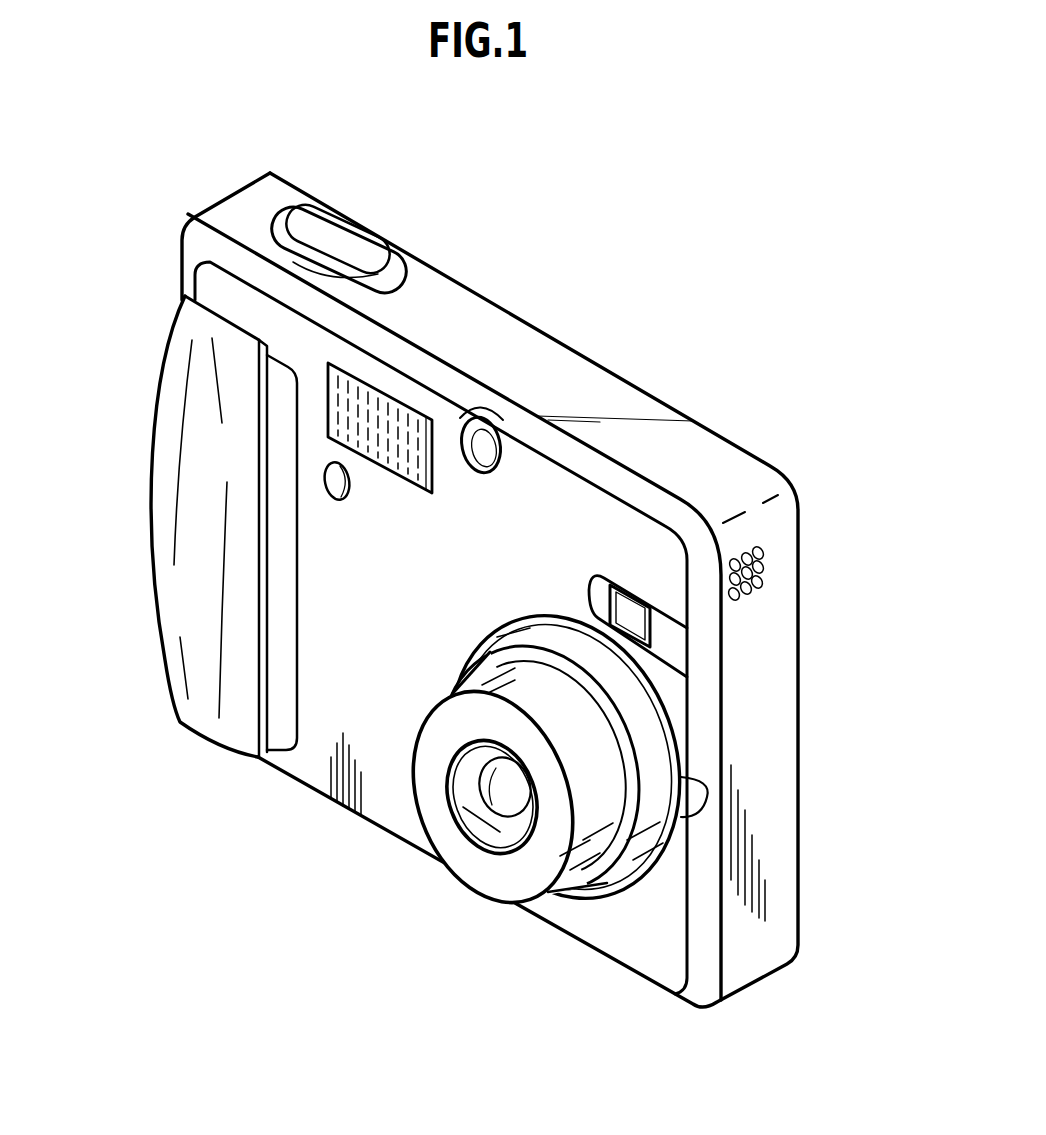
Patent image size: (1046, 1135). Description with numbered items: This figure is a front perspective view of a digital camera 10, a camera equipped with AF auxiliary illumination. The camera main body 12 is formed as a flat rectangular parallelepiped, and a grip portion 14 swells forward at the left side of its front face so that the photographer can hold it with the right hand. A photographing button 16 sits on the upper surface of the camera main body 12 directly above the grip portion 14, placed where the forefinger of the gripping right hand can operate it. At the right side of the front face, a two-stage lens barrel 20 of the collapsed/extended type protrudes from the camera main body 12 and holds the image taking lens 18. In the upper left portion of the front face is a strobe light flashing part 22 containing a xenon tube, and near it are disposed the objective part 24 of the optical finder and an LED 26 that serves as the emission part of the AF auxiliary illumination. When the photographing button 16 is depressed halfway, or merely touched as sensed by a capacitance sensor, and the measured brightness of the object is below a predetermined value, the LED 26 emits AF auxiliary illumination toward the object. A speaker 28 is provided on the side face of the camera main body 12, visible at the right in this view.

The digital camera 10 is at (589, 306).
The camera main body 12 is at (502, 383).
The grip portion 14 is at (162, 460).
The photographing button 16 is at (343, 232).
The image taking lens 18 is at (503, 800).
The lens barrel 20 is at (647, 840).
The strobe light flashing part 22 is at (396, 465).
The objective part of optical finder 24 is at (478, 474).
The LED 26 is at (333, 501).
The speaker 28 is at (761, 567).